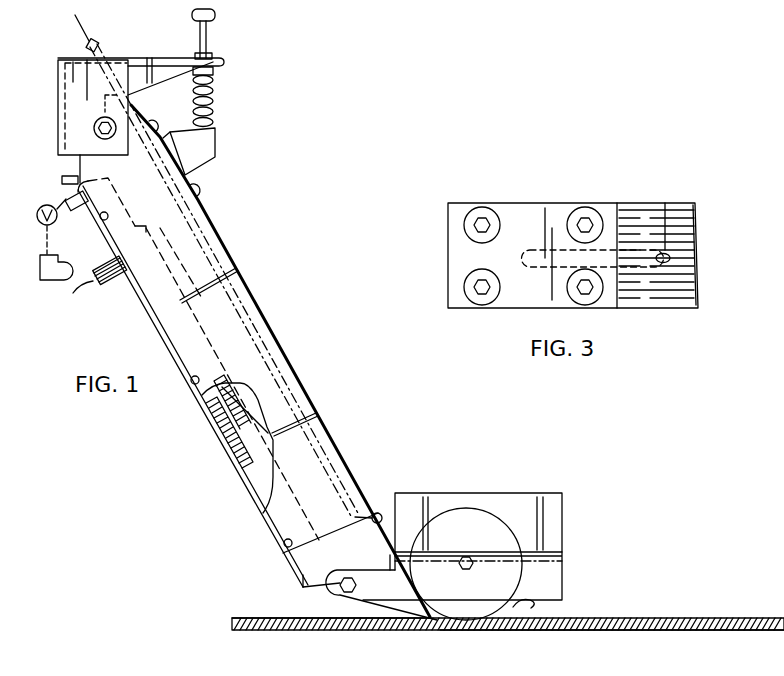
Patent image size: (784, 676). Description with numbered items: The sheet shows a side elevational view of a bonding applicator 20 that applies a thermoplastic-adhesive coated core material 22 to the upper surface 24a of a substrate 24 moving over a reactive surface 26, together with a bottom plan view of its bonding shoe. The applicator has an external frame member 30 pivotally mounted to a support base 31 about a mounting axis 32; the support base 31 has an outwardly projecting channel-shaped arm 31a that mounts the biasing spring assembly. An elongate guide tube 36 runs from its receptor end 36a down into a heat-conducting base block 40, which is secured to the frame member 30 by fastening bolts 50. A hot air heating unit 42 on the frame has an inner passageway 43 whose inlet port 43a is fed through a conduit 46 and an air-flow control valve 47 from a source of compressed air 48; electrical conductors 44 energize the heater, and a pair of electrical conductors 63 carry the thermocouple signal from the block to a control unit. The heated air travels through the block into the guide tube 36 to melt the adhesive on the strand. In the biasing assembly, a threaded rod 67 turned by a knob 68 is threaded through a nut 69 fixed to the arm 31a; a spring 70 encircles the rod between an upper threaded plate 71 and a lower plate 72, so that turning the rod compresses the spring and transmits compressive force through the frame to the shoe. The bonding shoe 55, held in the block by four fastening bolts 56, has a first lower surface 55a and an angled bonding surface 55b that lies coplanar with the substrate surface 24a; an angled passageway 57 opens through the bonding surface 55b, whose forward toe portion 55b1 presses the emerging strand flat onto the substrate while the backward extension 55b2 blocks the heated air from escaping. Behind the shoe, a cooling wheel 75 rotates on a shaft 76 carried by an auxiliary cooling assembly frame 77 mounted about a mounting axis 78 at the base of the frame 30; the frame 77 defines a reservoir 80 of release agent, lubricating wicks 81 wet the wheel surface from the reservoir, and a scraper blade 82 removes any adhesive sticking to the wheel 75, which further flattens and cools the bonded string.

In FIG. 1, the bonding applicator 20 is at (273, 301).
In FIG. 1, the thermoplastic-adhesive coated core material 22 is at (83, 24).
In FIG. 1, the substrate 24 is at (322, 627).
In FIG. 1, the upper surface of substrate 24a is at (266, 618).
In FIG. 1, the reactive surface 26 is at (538, 632).
In FIG. 1, the frame member 30 is at (262, 311).
In FIG. 1, the support base 31 is at (73, 90).
In FIG. 1, the channel-shaped arm 31a is at (163, 62).
In FIG. 1, the mounting axis 32 is at (110, 143).
In FIG. 1, the guide tube 36 is at (212, 249).
In FIG. 1, the receptor end 36a is at (98, 47).
In FIG. 1, the base block 40 is at (313, 565).
In FIG. 1, the hot air heating unit 42 is at (190, 362).
In FIG. 1, the inner passageway 43 is at (242, 435).
In FIG. 1, the inlet port 43a is at (131, 228).
In FIG. 1, the electrical conductors 44 is at (93, 292).
In FIG. 1, the conduit 46 is at (84, 204).
In FIG. 1, the air-flow control valve 47 is at (53, 225).
In FIG. 1, the source of compressed air 48 is at (56, 281).
In FIG. 1, the fastening bolts 50 is at (380, 513).
In FIG. 3, the bonding shoe 55 is at (512, 308).
In FIG. 3, the first lower surface 55a is at (518, 218).
In FIG. 3, the bonding surface 55b is at (648, 285).
In FIG. 3, the toe portion 55b1 is at (695, 200).
In FIG. 3, the backward extension 55b2 is at (663, 200).
In FIG. 3, the fastening bolts 56 is at (477, 208).
In FIG. 3, the passageway 57 is at (670, 257).
In FIG. 1, the electrical conductors 63 is at (62, 180).
In FIG. 1, the threaded rod 67 is at (208, 43).
In FIG. 1, the knob 68 is at (215, 15).
In FIG. 1, the nut 69 is at (213, 56).
In FIG. 1, the spring 70 is at (213, 108).
In FIG. 1, the threaded plate 71 is at (217, 72).
In FIG. 1, the lower plate 72 is at (217, 128).
In FIG. 1, the cooling wheel 75 is at (468, 607).
In FIG. 1, the shaft 76 is at (470, 567).
In FIG. 1, the auxiliary cooling assembly frame 77 is at (553, 568).
In FIG. 1, the mounting axis 78 is at (338, 588).
In FIG. 1, the reservoir 80 is at (537, 530).
In FIG. 1, the lubricating wicks 81 is at (413, 523).
In FIG. 1, the scraper blade 82 is at (515, 605).